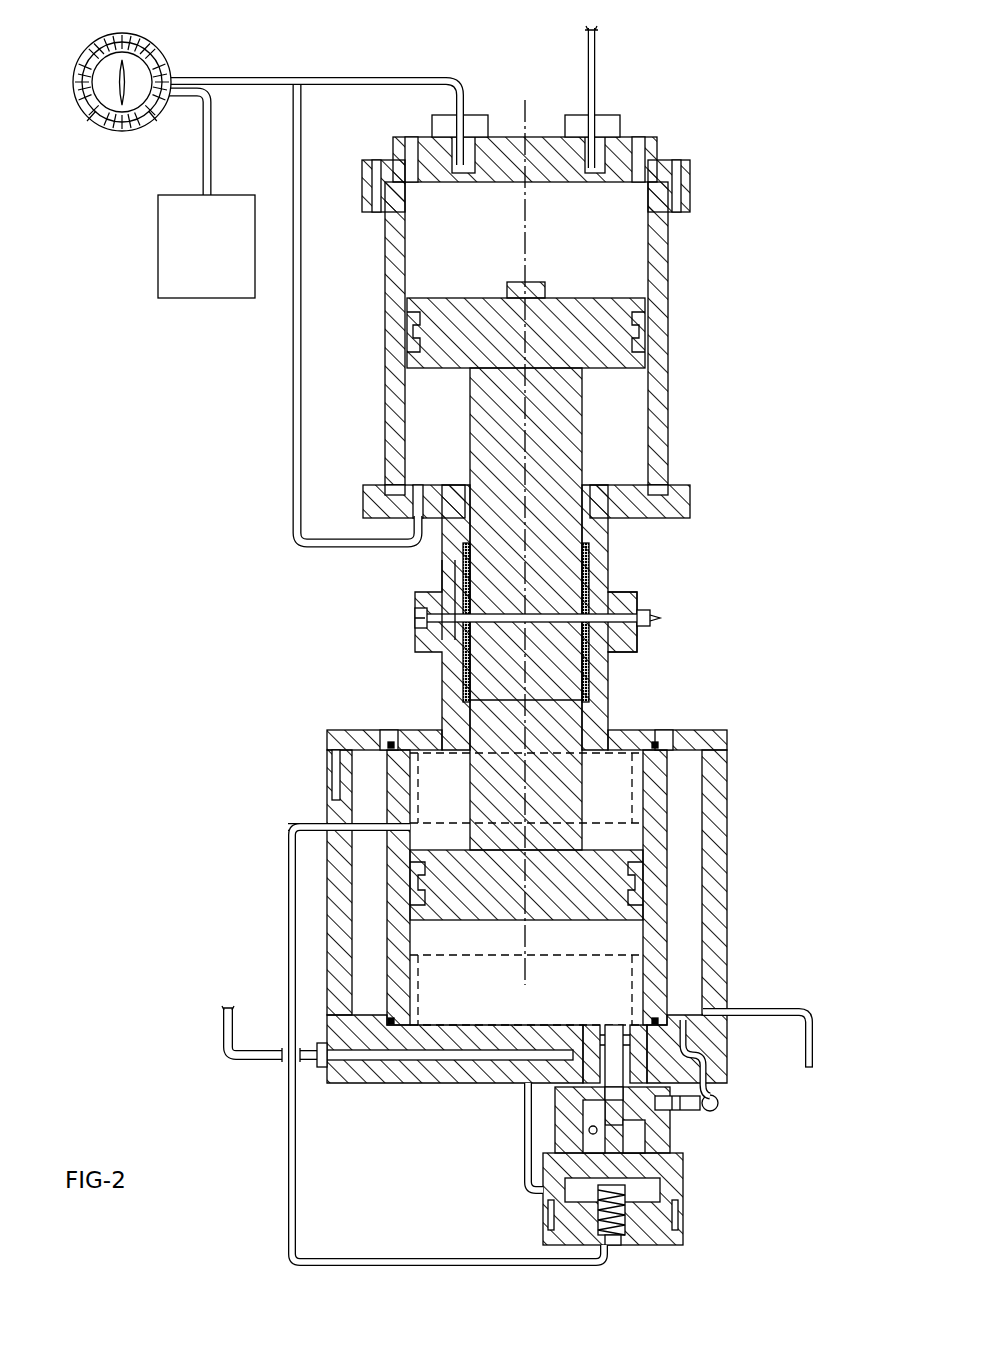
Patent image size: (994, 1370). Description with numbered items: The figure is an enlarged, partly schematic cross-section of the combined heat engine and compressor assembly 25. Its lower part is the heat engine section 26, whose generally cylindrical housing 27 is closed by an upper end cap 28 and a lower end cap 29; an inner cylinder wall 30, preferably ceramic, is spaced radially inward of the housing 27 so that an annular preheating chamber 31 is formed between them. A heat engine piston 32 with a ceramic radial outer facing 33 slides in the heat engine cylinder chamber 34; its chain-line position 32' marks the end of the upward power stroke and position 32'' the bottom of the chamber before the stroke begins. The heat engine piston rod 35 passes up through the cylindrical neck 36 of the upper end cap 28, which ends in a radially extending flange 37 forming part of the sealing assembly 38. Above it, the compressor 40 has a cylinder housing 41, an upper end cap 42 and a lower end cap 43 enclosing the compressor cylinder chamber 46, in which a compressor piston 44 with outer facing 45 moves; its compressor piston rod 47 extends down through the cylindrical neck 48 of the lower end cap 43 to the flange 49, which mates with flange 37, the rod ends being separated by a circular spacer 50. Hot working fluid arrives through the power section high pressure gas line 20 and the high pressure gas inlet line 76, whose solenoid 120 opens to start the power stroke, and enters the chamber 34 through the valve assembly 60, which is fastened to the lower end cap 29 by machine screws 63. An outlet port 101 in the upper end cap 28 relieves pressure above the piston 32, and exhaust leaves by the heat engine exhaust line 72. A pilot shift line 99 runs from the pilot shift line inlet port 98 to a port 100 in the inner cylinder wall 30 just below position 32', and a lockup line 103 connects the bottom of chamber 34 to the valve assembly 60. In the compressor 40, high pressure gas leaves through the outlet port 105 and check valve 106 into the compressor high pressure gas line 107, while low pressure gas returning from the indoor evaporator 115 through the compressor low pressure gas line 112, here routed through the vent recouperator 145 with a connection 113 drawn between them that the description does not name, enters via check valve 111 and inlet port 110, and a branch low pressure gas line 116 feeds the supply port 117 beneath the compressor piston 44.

The power section high pressure gas line 20 is at (810, 1040).
The combined heat engine and compressor assembly 25 is at (700, 604).
The heat engine section 26 is at (730, 738).
The cylinder housing 27 is at (720, 790).
The upper end cap 28 is at (335, 738).
The lower end cap 29 is at (385, 1085).
The inner cylinder wall 30 is at (380, 755).
The annular preheating chamber 31 is at (690, 840).
The heat engine piston 32 is at (593, 885).
The chain line position of heat engine piston 32' is at (596, 788).
The chain line position of heat engine piston 32'' is at (598, 990).
The radial outer facing 33 is at (650, 905).
The heat engine cylinder chamber 34 is at (512, 949).
The heat engine piston rod 35 is at (500, 715).
The cylindrical neck 36 is at (448, 677).
The radially extending flange 37 is at (608, 650).
The sealing assembly 38 is at (662, 618).
The compressor 40 is at (700, 180).
The cylinder housing 41 is at (660, 250).
The upper end cap 42 is at (620, 150).
The lower end cap 43 is at (655, 525).
The compressor piston 44 is at (610, 300).
The radially outer facing 45 is at (640, 345).
The compressor cylinder chamber 46 is at (572, 257).
The compressor piston rod 47 is at (580, 455).
The cylindrical neck 48 is at (605, 560).
The radially extending flange 49 is at (622, 598).
The circular spacer 50 is at (465, 613).
The valve assembly 60 is at (692, 1196).
The machine screws 63 is at (560, 1130).
The heat engine exhaust line 72 is at (250, 1055).
The high pressure gas inlet line 76 is at (715, 1093).
The pilot shift line inlet port 98 is at (625, 1250).
The pilot shift line 99 is at (297, 1180).
The port 100 is at (405, 822).
The outlet port 101 is at (620, 742).
The lockup line 103 is at (535, 1195).
The compressor high pressure gas outlet port 105 is at (595, 165).
The compressor high pressure gas check valve 106 is at (557, 122).
The compressor high pressure gas line 107 is at (600, 63).
The compressor low pressure gas inlet port 110 is at (468, 165).
The compressor low pressure gas check valve 111 is at (438, 125).
The compressor low pressure gas line 112 is at (347, 79).
The gauge line 113 is at (200, 150).
The indoor evaporator 115 is at (210, 280).
The branch low pressure gas line 116 is at (297, 432).
The compressor low pressure gas supply port 117 is at (438, 497).
The solenoid 120 is at (715, 1110).
The vent recouperator 145 is at (122, 34).